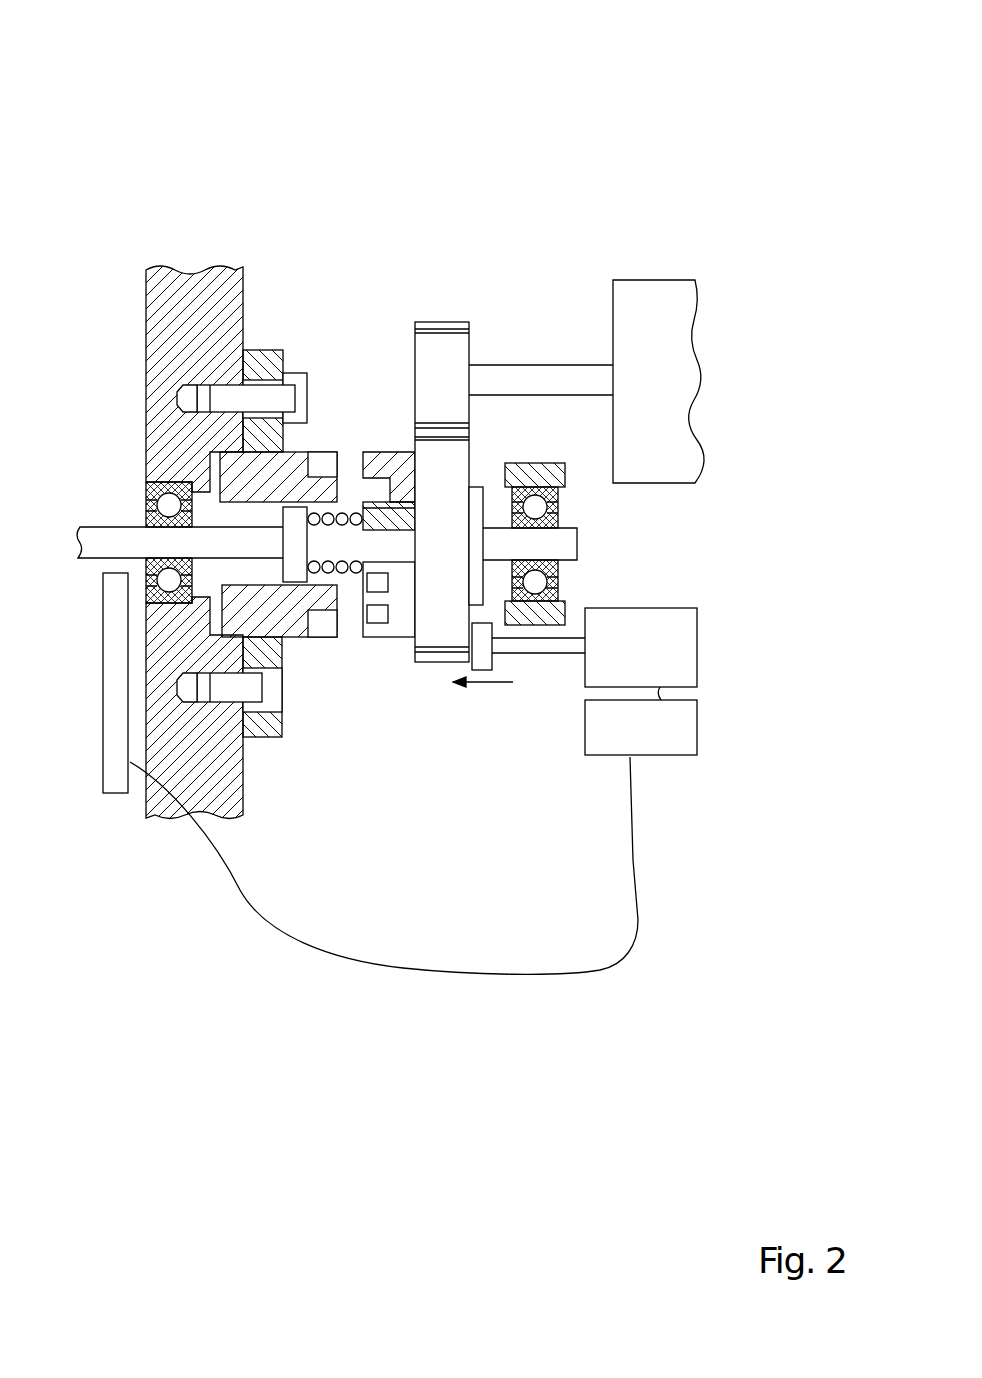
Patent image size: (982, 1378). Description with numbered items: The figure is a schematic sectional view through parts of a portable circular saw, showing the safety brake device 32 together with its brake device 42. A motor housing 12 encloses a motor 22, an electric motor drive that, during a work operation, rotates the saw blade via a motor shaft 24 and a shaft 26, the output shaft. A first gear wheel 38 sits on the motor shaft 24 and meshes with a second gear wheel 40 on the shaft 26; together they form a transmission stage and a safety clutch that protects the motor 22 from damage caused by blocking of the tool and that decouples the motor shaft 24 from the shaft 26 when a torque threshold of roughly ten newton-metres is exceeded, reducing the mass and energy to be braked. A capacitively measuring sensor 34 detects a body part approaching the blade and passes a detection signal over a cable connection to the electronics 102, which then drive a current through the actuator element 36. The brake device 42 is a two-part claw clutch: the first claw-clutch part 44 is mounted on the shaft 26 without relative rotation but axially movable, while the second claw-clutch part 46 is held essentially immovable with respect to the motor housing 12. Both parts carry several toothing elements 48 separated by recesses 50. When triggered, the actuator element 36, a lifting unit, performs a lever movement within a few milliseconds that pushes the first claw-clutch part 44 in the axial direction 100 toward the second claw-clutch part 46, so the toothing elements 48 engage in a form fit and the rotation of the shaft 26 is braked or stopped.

The motor housing 12 is at (194, 280).
The motor 22 is at (675, 298).
The motor shaft 24 is at (573, 365).
The shaft 26 is at (97, 525).
The safety brake device 32 is at (549, 112).
The sensor 34 is at (113, 785).
The actuator element 36 is at (683, 625).
The first gear wheel 38 is at (441, 338).
The second gear wheel 40 is at (460, 468).
The brake device 42 is at (378, 822).
The first claw-clutch part 44 is at (415, 690).
The second claw-clutch part 46 is at (303, 705).
The toothing element 48 is at (326, 492).
The recess 50 is at (378, 612).
The direction 100 is at (492, 682).
The electronics 102 is at (660, 737).